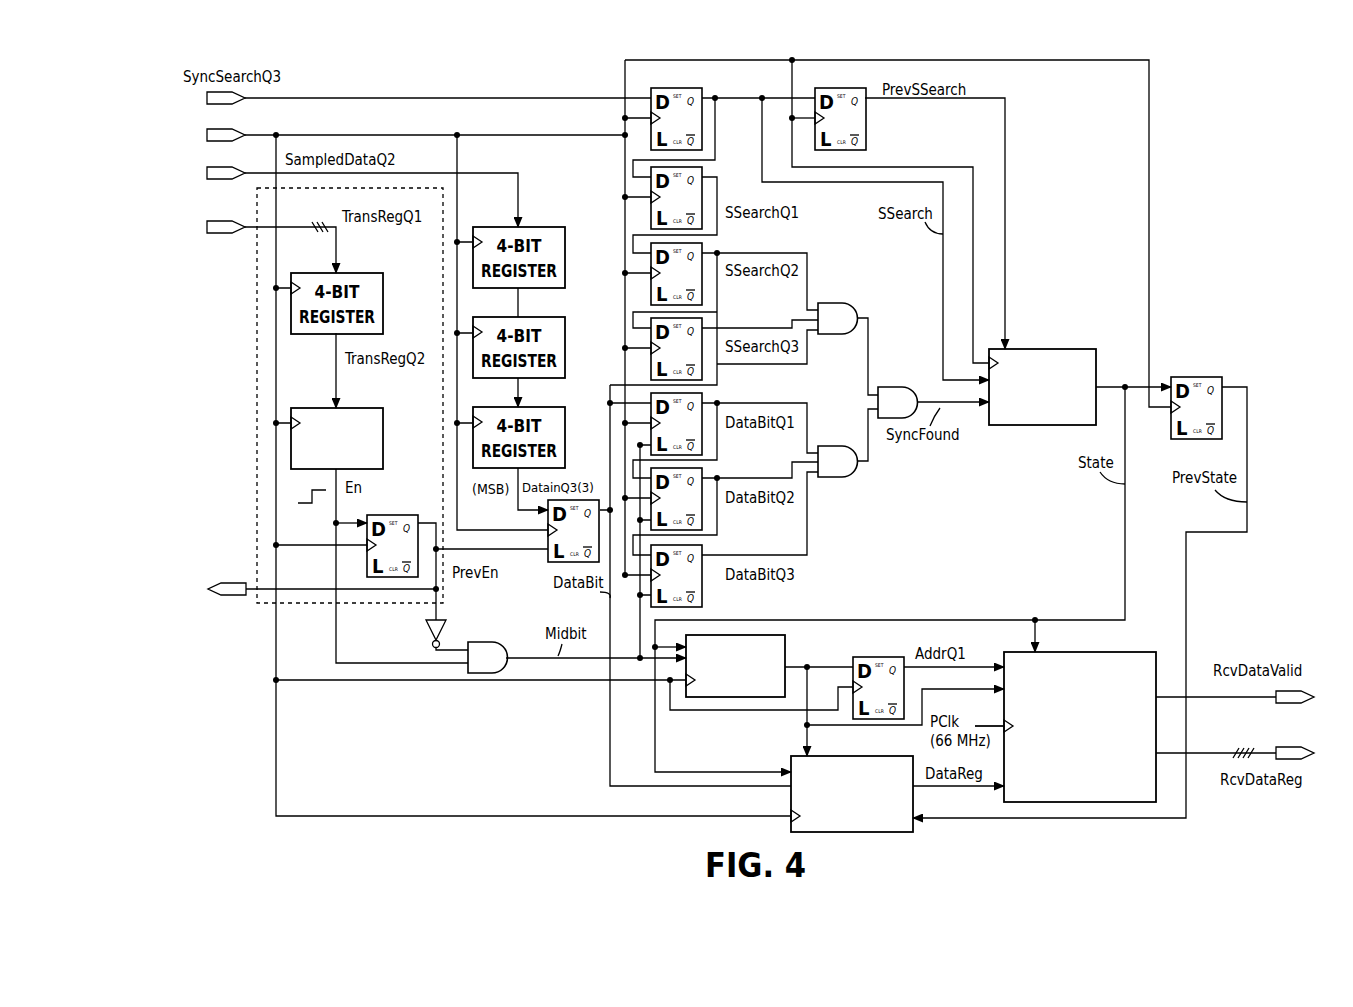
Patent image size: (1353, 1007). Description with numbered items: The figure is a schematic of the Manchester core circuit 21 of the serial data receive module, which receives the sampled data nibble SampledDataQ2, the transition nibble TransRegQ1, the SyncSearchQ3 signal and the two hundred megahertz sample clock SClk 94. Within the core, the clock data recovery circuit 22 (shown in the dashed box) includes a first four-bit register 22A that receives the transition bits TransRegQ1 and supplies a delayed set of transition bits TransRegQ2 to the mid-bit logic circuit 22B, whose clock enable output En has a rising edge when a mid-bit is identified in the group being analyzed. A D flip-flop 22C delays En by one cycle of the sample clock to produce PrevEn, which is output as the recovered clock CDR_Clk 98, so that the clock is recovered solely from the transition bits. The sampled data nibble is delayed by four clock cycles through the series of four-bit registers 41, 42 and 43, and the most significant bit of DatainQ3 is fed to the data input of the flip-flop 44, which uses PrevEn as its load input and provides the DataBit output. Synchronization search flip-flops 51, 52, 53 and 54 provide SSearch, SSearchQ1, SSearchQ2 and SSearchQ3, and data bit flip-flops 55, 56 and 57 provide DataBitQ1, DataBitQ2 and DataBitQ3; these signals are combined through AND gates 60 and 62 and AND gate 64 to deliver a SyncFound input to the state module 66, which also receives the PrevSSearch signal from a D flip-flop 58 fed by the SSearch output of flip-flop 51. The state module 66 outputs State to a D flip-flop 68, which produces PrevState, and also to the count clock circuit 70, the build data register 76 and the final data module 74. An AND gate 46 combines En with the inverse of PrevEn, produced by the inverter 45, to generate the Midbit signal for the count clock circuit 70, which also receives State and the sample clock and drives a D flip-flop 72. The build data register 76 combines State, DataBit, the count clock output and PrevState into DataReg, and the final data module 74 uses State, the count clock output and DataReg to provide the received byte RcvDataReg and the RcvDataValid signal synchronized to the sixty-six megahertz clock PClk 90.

The Manchester core circuit 21 is at (1202, 129).
The clock data recovery circuit 22 is at (257, 348).
The first 4-bit register 22A is at (356, 273).
The mid-bit logic circuit 22B is at (356, 408).
The D flip-flop 22C is at (391, 515).
The 4-bit register 41 is at (536, 227).
The 4-bit register 42 is at (565, 351).
The 4-bit register 43 is at (565, 441).
The flip-flop 44 is at (548, 527).
The inverter 45 is at (426, 630).
The AND gate 46 is at (483, 641).
The flip-flop 51 is at (676, 88).
The flip-flop 52 is at (702, 170).
The flip-flop 53 is at (702, 246).
The flip-flop 54 is at (702, 321).
The data bit flip-flop 55 is at (702, 396).
The data bit flip-flop 56 is at (702, 471).
The data bit flip-flop 57 is at (702, 548).
The D flip-flop 58 is at (842, 88).
The AND gate 60 is at (823, 303).
The AND gate 62 is at (823, 446).
The AND gate 64 is at (890, 387).
The state module 66 is at (1040, 349).
The D flip-flop 68 is at (1194, 377).
The count clock circuit 70 is at (785, 636).
The D flip-flop 72 is at (875, 657).
The final data module 74 is at (1062, 652).
The build data register 76 is at (791, 762).
The 66 MHz clock PClk 90 is at (986, 726).
The 200 MHz sample clock SClk 94 is at (218, 138).
The clock data recovery clock signal CDR_Clk 98 is at (228, 581).